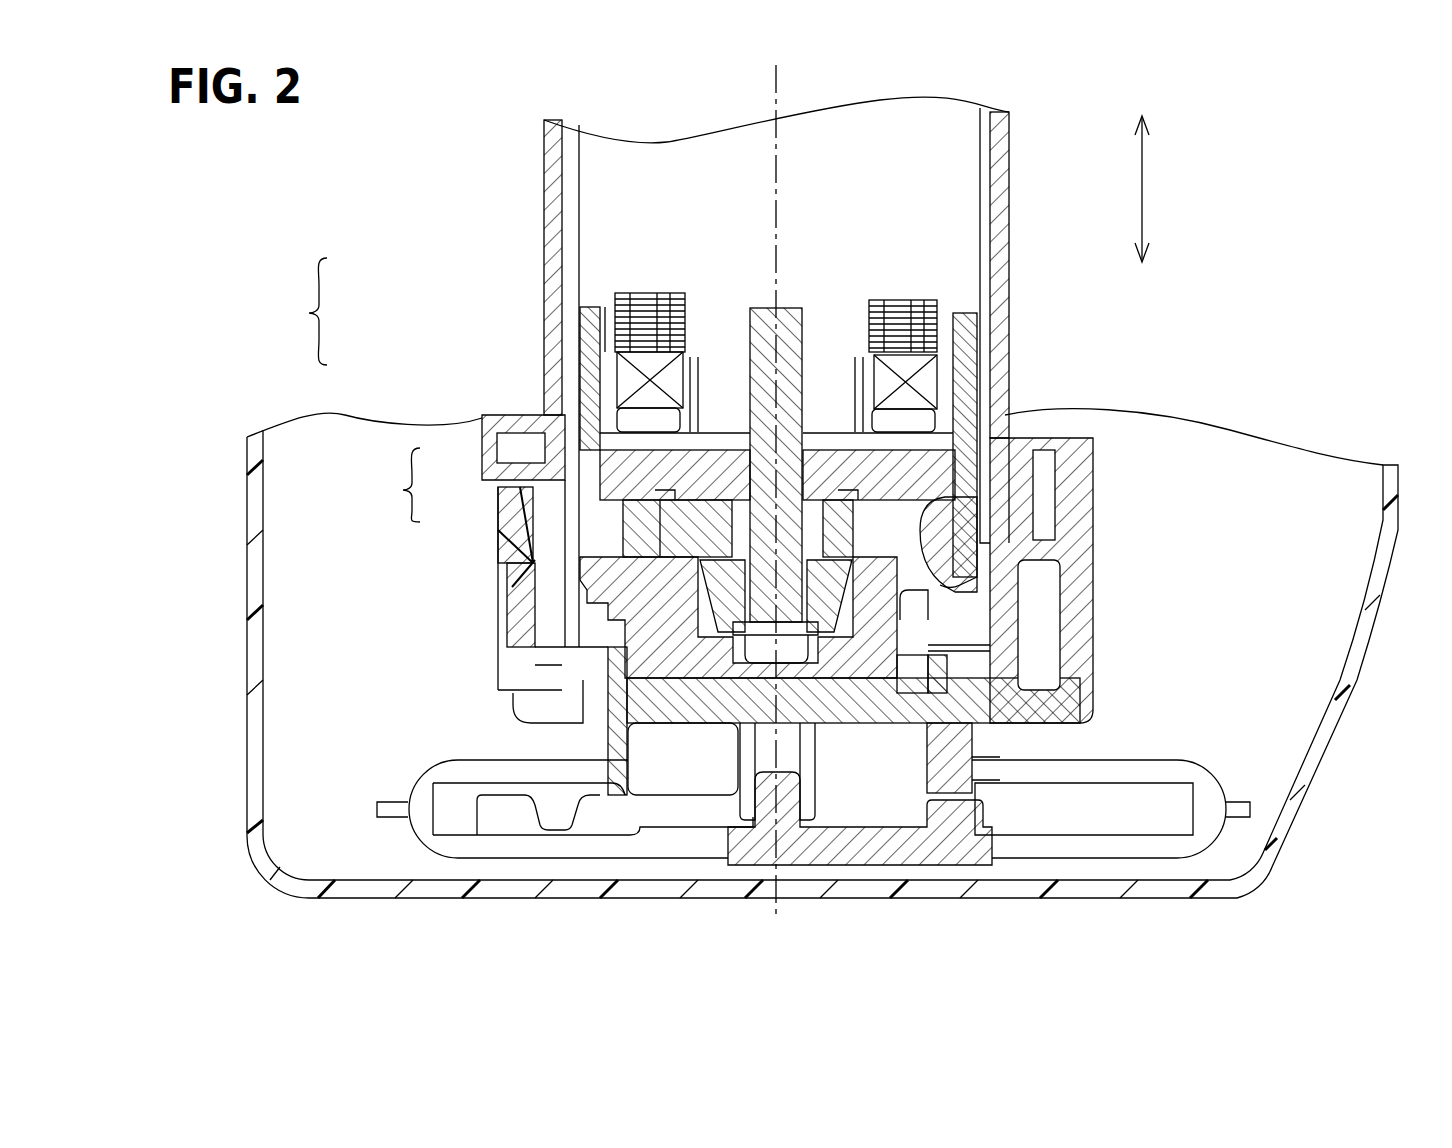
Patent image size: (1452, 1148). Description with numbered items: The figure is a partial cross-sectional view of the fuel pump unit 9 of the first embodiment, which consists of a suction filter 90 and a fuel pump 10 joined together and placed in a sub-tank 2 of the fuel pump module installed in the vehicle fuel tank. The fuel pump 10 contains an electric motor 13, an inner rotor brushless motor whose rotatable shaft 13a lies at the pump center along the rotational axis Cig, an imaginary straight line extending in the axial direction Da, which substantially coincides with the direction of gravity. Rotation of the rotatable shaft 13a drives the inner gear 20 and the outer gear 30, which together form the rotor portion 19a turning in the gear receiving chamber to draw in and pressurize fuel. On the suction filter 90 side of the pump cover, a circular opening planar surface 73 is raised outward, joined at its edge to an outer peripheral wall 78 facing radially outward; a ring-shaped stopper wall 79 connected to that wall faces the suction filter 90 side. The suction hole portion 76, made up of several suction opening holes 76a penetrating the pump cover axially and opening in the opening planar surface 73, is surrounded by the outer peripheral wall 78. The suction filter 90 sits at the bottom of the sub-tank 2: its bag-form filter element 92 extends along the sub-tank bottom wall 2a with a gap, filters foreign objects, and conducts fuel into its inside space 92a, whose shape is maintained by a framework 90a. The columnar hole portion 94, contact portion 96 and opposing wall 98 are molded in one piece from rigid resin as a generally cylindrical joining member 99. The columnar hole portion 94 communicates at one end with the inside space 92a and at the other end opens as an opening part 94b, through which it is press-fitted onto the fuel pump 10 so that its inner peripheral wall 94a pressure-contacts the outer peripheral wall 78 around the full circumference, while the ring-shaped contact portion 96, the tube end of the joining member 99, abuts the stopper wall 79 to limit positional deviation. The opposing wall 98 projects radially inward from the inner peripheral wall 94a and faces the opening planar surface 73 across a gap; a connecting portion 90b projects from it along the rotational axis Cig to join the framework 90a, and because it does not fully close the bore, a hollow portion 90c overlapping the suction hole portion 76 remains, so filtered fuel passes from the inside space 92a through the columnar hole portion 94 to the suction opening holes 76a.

The sub-tank 2 is at (1307, 805).
The sub-tank bottom wall 2a is at (1020, 865).
The fuel pump unit 9 is at (307, 311).
The fuel pump 10 is at (576, 325).
The electric motor 13 is at (945, 327).
The rotatable shaft 13a is at (805, 382).
The rotor portion 19a is at (390, 485).
The inner gear 20 is at (693, 497).
The outer gear 30 is at (640, 480).
The opening planar surface 73 is at (690, 683).
The suction hole portion 76 is at (930, 498).
The suction opening holes 76a is at (958, 582).
The outer peripheral wall 78 is at (960, 690).
The stopper wall 79 is at (985, 630).
The suction filter 90 is at (400, 786).
The framework 90a is at (455, 838).
The connecting portion 90b is at (727, 807).
The hollow portion 90c is at (910, 705).
The filter element 92 is at (417, 847).
The inside space 92a is at (850, 807).
The columnar hole portion 94 is at (990, 686).
The inner peripheral wall 94a is at (630, 632).
The opening part 94b is at (1000, 560).
The contact portion 96 is at (935, 613).
The opposing wall 98 is at (660, 690).
The joining member 99 is at (573, 750).
The rotational axis Cig is at (776, 85).
The axial direction Da is at (1142, 190).